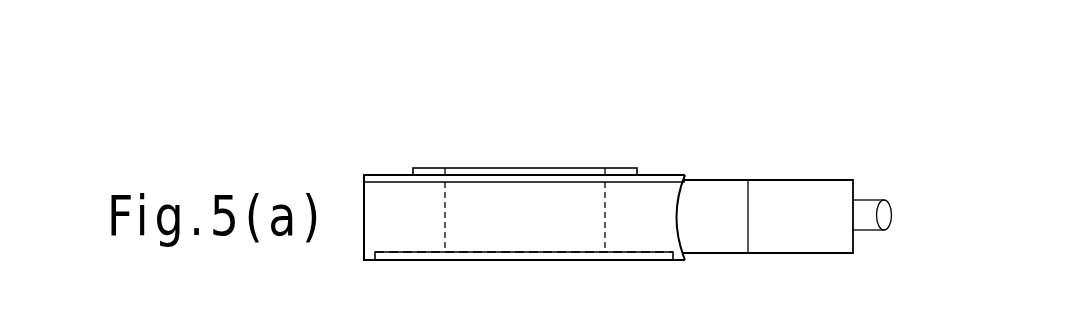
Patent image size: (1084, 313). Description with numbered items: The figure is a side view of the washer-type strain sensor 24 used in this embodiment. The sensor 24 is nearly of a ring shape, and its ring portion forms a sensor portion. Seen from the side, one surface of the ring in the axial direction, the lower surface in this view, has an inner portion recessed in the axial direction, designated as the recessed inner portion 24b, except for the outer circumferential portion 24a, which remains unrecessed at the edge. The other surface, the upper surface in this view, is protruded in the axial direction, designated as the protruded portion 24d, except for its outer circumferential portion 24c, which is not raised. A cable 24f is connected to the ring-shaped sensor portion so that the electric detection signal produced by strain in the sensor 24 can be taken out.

The washer-type strain sensor 24 is at (727, 161).
The outer circumferential portion 24a is at (366, 262).
The recessed inner portion 24b is at (420, 265).
The outer circumferential portion 24c is at (662, 175).
The protruded portion 24d is at (430, 167).
The cable 24f is at (873, 203).